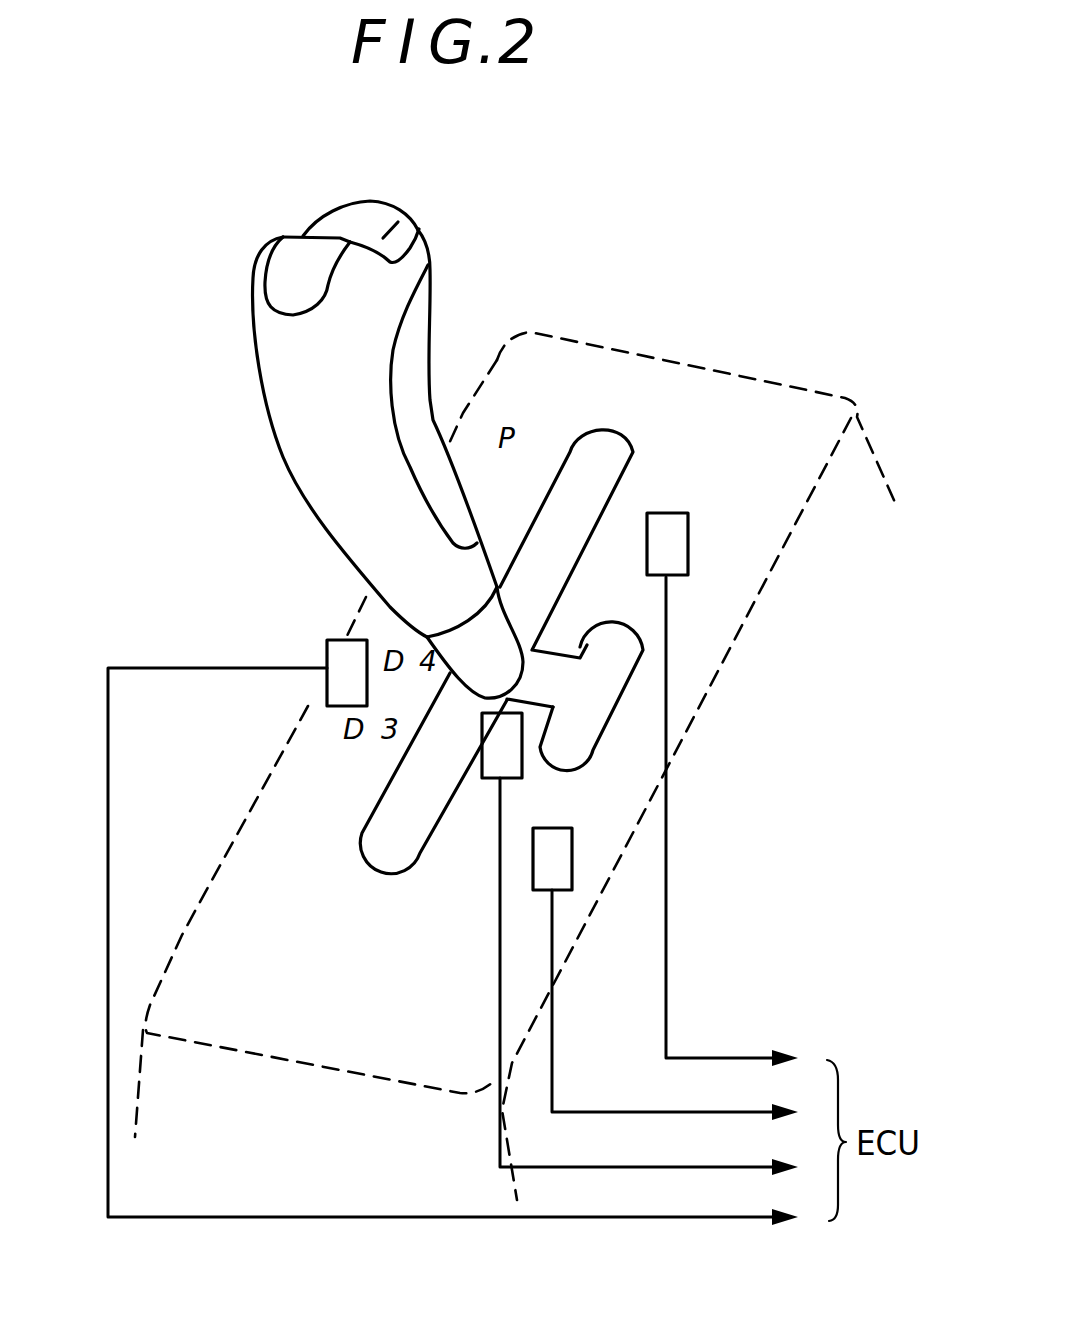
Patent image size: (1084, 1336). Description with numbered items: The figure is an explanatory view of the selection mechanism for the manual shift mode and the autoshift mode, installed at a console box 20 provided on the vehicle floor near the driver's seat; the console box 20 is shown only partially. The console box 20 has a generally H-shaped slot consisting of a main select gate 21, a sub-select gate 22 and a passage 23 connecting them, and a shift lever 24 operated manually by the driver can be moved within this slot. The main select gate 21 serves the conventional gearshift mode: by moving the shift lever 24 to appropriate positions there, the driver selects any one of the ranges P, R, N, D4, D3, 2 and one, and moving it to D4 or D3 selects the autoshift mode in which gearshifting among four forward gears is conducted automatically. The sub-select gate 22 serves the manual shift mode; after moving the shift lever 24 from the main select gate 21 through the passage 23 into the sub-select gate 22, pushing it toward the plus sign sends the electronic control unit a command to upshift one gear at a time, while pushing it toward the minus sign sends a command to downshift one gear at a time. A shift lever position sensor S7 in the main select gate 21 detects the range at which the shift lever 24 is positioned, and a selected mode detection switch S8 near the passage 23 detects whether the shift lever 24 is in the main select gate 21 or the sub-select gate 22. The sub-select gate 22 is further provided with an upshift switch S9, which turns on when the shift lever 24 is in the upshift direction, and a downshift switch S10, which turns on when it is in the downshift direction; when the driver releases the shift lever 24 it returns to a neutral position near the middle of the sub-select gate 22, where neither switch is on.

The range (position) 2 is at (403, 773).
The console box 20 is at (588, 343).
The main select gate 21 is at (597, 465).
The sub-select gate 22 is at (606, 690).
The passage 23 is at (543, 677).
The shift lever 24 is at (431, 249).
The shift lever position sensor S7 is at (327, 641).
The selected mode detection switch S8 is at (497, 768).
The upshift switch S9 is at (670, 543).
The downshift switch S10 is at (527, 790).